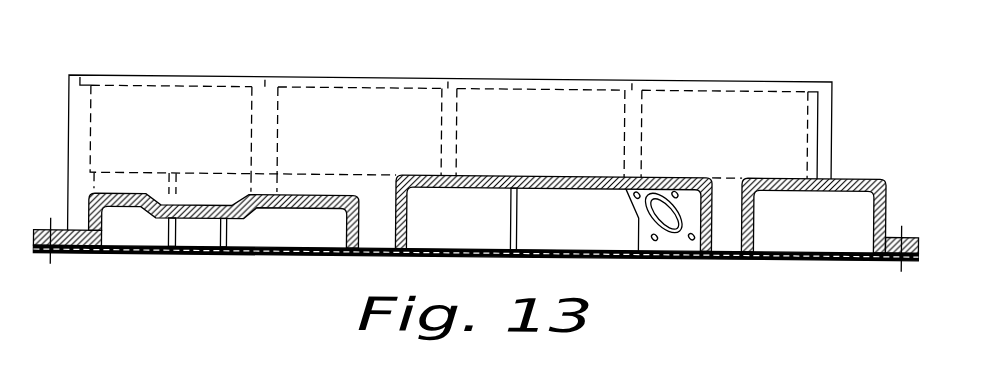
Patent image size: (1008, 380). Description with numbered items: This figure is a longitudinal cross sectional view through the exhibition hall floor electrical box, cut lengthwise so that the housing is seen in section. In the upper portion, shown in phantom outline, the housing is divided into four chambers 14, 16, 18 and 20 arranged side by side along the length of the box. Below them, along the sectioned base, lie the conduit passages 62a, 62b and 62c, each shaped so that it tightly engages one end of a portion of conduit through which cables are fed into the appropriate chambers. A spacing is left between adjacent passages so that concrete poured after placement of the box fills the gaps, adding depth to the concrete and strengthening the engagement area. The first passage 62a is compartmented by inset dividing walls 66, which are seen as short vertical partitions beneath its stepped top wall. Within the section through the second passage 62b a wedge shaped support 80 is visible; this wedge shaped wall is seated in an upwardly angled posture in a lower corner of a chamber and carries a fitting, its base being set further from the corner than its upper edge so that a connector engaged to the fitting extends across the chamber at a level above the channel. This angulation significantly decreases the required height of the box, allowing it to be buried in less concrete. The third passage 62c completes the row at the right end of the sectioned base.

The chamber 14 is at (170, 79).
The chamber 16 is at (362, 79).
The chamber 18 is at (543, 78).
The chamber 20 is at (748, 82).
The passage 62a is at (291, 218).
The passage 62b is at (596, 222).
The passage 62c is at (818, 211).
The inset dividing walls 66 is at (222, 233).
The wedge shaped support 80 is at (670, 238).